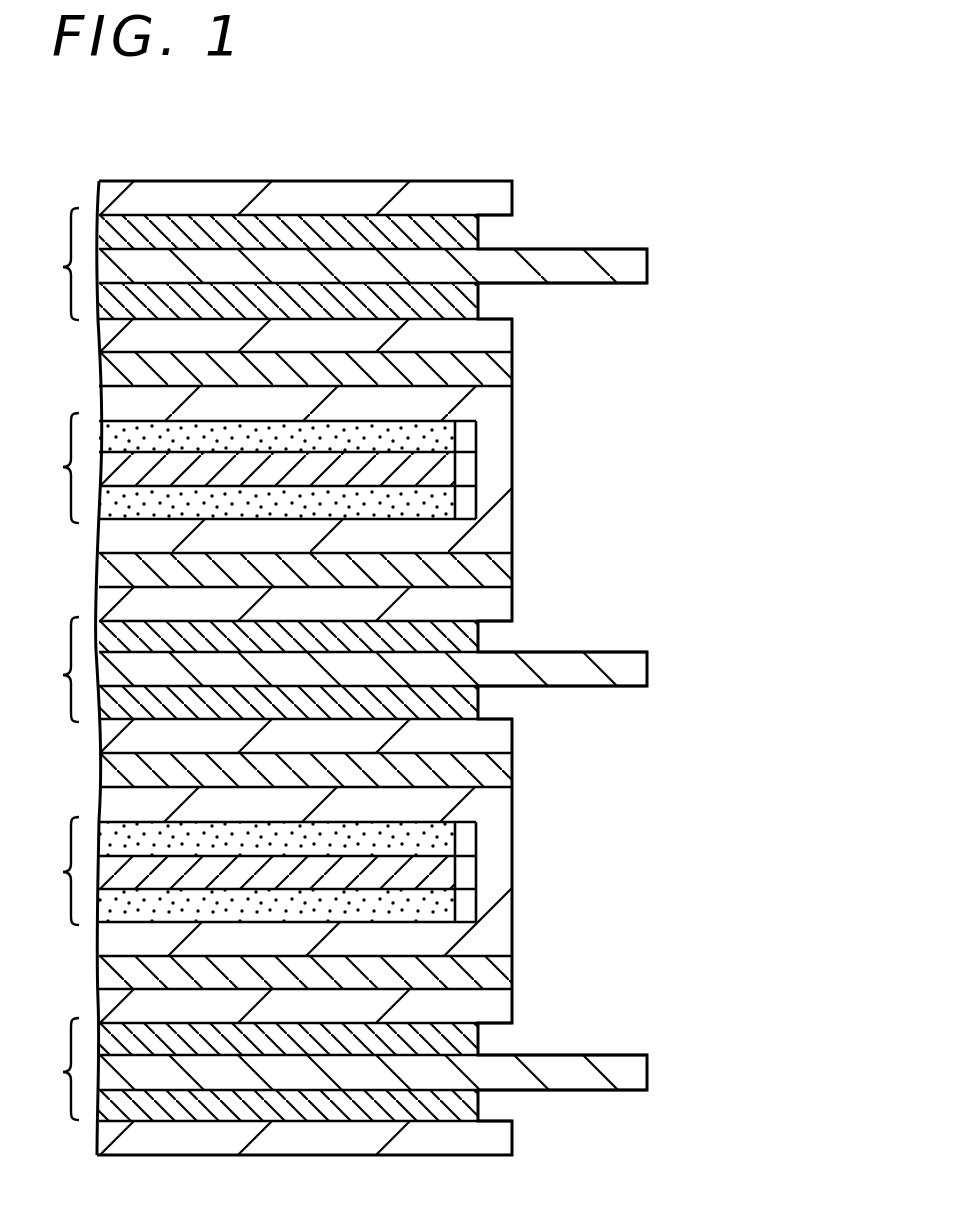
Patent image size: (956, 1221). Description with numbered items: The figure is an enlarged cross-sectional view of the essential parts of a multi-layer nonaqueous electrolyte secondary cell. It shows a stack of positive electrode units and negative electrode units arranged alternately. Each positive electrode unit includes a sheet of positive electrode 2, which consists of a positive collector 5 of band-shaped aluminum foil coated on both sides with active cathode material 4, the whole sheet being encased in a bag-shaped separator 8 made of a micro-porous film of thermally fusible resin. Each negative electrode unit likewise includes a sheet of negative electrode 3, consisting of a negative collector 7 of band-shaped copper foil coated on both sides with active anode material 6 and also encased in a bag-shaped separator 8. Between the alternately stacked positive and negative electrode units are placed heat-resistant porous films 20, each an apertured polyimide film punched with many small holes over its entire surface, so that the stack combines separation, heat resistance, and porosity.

The positive electrode 2 is at (57, 669).
The negative electrode 3 is at (58, 664).
The active cathode material 4 is at (455, 432).
The positive collector 5 is at (445, 470).
The active anode material 6 is at (480, 237).
The negative collector 7 is at (628, 266).
The bag-shaped separator 8 is at (498, 197).
The heat-resistant porous film 20 is at (492, 370).